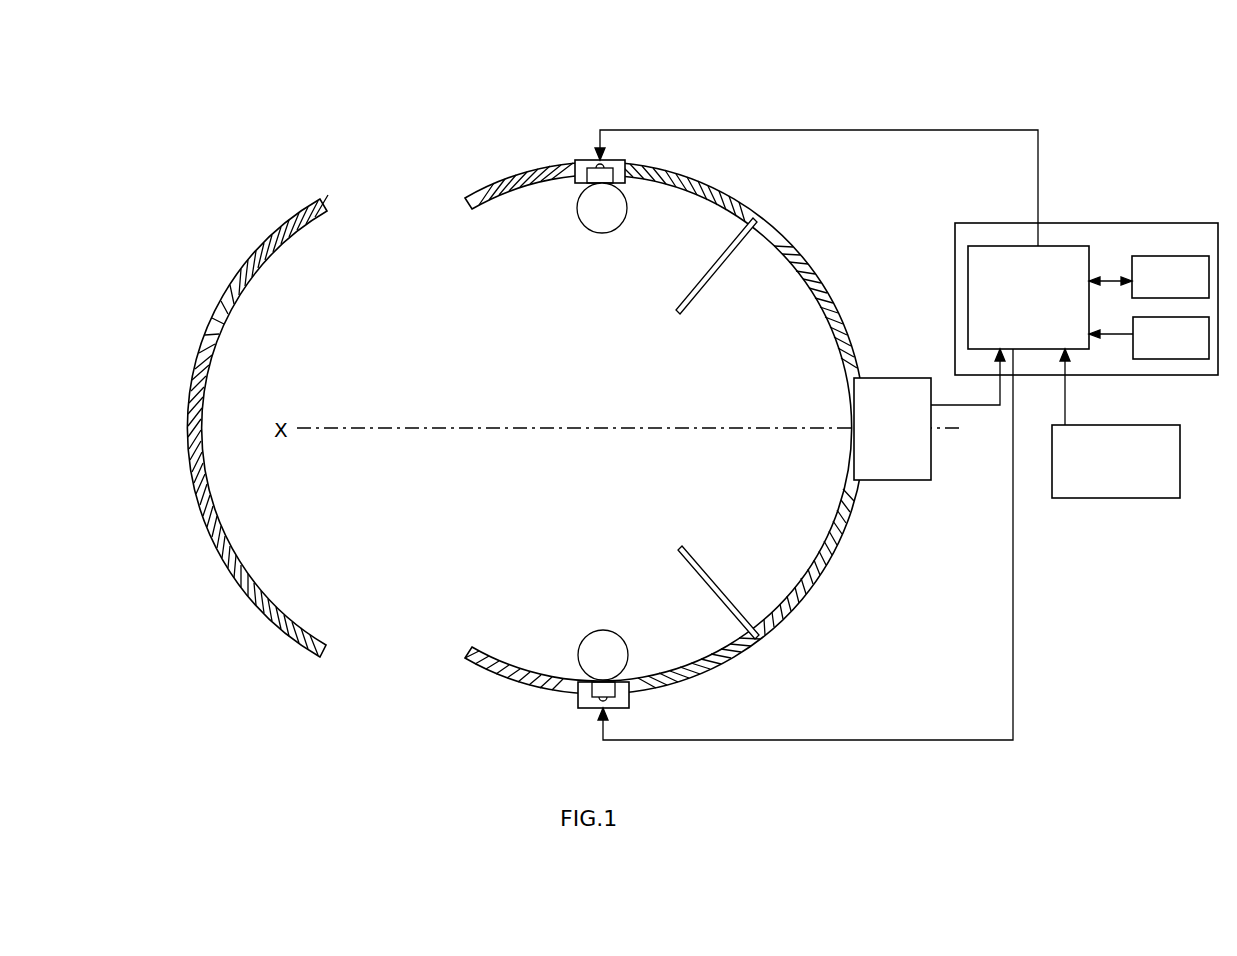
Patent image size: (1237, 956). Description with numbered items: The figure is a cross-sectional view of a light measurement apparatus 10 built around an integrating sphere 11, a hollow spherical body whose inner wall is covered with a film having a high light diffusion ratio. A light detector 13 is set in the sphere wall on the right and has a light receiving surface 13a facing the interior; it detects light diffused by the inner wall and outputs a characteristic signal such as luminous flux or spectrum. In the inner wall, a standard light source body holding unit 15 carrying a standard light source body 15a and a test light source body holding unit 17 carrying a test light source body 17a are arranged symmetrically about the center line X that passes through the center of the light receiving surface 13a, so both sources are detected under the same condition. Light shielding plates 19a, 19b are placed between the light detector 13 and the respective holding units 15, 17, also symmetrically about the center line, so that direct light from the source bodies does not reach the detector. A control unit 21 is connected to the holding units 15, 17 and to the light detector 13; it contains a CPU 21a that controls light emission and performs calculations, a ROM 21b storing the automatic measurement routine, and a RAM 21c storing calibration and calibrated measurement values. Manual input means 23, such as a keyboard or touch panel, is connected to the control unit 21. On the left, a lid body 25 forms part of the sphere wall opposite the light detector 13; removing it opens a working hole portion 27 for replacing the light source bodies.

The light measurement apparatus 10 is at (1095, 100).
The integrating sphere 11 is at (487, 665).
The light detector 13 is at (906, 469).
The light receiving surface 13a is at (845, 455).
The standard light source body holding unit 15 is at (578, 170).
The standard light source body 15a is at (595, 207).
The test light source body holding unit 17 is at (593, 700).
The test light source body 17a is at (598, 655).
The light shielding plate 19a is at (720, 268).
The light shielding plate 19b is at (718, 590).
The control unit 21 is at (1157, 246).
The CPU 21a is at (1045, 306).
The ROM 21b is at (1189, 347).
The RAM 21c is at (1189, 286).
The manual input means 23 is at (1129, 474).
The lid body 25 is at (229, 560).
The working hole portion 27 is at (400, 243).